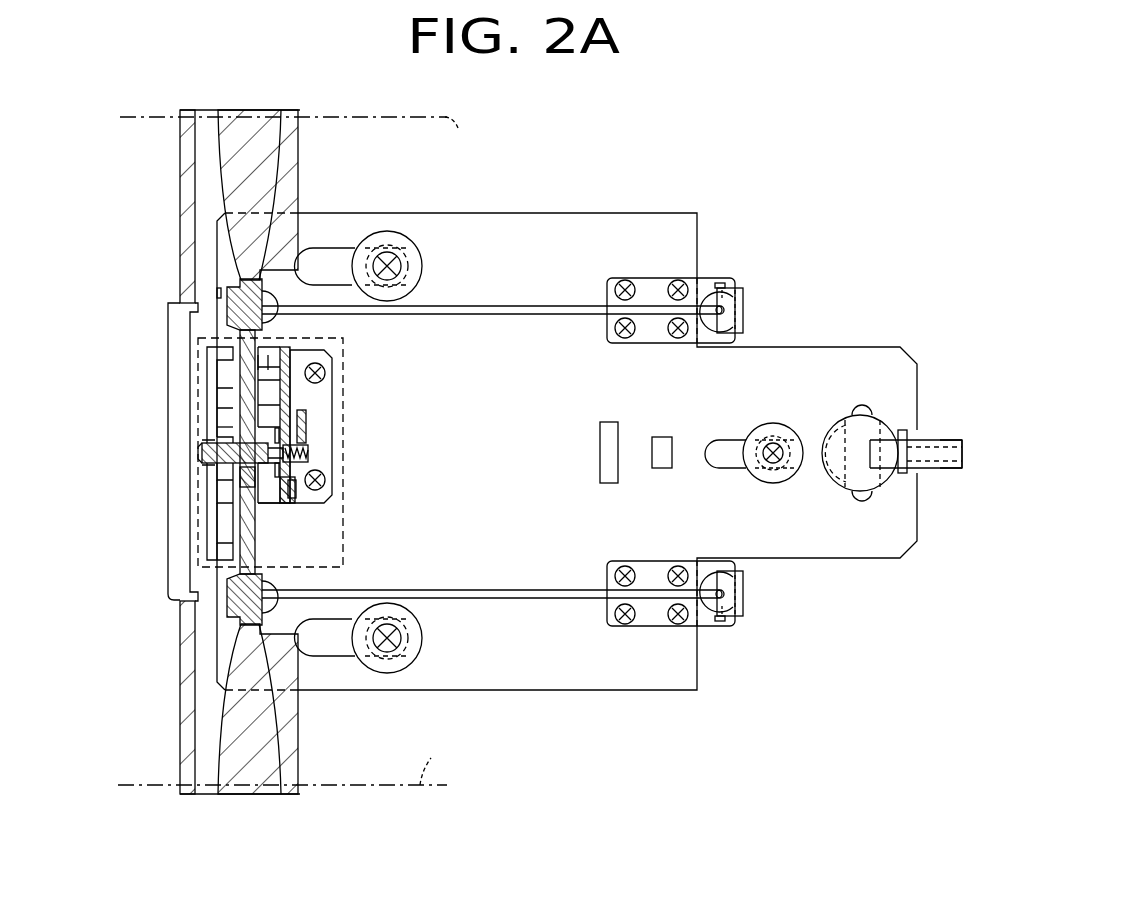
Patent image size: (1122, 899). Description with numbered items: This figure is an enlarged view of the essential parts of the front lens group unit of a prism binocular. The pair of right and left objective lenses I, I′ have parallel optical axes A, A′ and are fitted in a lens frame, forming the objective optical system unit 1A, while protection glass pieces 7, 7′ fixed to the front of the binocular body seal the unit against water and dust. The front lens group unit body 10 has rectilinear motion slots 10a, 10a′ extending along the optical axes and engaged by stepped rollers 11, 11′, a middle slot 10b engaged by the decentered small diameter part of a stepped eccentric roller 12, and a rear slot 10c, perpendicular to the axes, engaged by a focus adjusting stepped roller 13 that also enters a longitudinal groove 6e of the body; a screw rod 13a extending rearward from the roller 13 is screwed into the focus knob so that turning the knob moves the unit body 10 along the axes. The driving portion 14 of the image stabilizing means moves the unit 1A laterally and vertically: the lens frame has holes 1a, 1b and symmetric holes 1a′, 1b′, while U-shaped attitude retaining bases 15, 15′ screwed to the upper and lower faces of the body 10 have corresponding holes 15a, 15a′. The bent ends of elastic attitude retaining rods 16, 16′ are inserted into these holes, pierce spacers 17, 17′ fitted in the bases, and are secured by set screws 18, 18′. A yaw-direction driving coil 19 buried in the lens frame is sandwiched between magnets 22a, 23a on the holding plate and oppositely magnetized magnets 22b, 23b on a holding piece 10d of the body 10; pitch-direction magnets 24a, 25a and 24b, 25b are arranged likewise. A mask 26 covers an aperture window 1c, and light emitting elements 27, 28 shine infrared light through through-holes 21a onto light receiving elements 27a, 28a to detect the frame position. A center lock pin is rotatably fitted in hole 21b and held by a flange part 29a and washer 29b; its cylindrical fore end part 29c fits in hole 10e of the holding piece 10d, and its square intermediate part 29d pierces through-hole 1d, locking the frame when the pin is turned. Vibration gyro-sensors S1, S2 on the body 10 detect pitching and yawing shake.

The hole 1a is at (192, 277).
The hole 1b is at (215, 275).
The hole 1a′ is at (179, 609).
The hole 1b′ is at (220, 610).
The objective optical system unit 1A is at (214, 292).
The aperture window 1c is at (243, 513).
The through-hole 1d is at (216, 437).
The longitudinal groove 6e is at (838, 470).
The protection glass piece 7 is at (182, 132).
The protection glass piece 7′ is at (183, 736).
The front lens group unit body 10 is at (575, 240).
The rectilinear motion slot 10a is at (318, 262).
The rectilinear motion slot 10a′ is at (318, 650).
The rectilinear motion slot 10b is at (717, 466).
The rectilinear motion slot 10c is at (863, 403).
The holding piece 10d is at (210, 480).
The hole 10e is at (212, 446).
The stepped roller 11 is at (405, 240).
The stepped roller 11′ is at (410, 632).
The stepped eccentric roller 12 is at (773, 484).
The focus adjusting stepped roller 13 is at (888, 428).
The screw rod 13a is at (950, 470).
The driving portion 14 is at (190, 326).
The attitude retaining base 15 is at (652, 290).
The attitude retaining base 15′ is at (652, 628).
The hole 15a is at (746, 305).
The hole 15a′ is at (746, 603).
The attitude retaining rod 16 is at (558, 316).
The attitude retaining rod 16′ is at (557, 589).
The spacer 17 is at (746, 320).
The spacer 17′ is at (746, 586).
The set screw 18 is at (721, 286).
The set screw 18′ is at (722, 623).
The yaw-direction driving coil 19 is at (265, 360).
The through-hole 21a is at (271, 508).
The hole 21b is at (300, 468).
The yaw-direction magnet 22a is at (275, 357).
The yaw-direction magnet 22b is at (225, 352).
The yaw-direction magnet 23a is at (272, 388).
The yaw-direction magnet 23b is at (224, 388).
The pitch-direction magnet 24a is at (270, 408).
The pitch-direction magnet 24b is at (224, 408).
The pitch-direction magnet 25a is at (363, 425).
The pitch-direction magnet 25b is at (151, 396).
The mask 26 is at (227, 492).
The light emitting element 27 is at (337, 526).
The light emitting element 28 is at (297, 503).
The light receiving element 27a is at (154, 518).
The light receiving element 28a is at (233, 494).
The flange part 29a is at (306, 422).
The washer 29b is at (305, 448).
The fore end part 29c is at (204, 455).
The intermediate part 29d is at (299, 491).
The vibration gyro-sensor S1 is at (606, 472).
The vibration gyro-sensor S2 is at (665, 439).
The optical axis A is at (300, 135).
The optical axis A′ is at (288, 764).
The objective lens I is at (267, 165).
The objective lens I′ is at (267, 765).